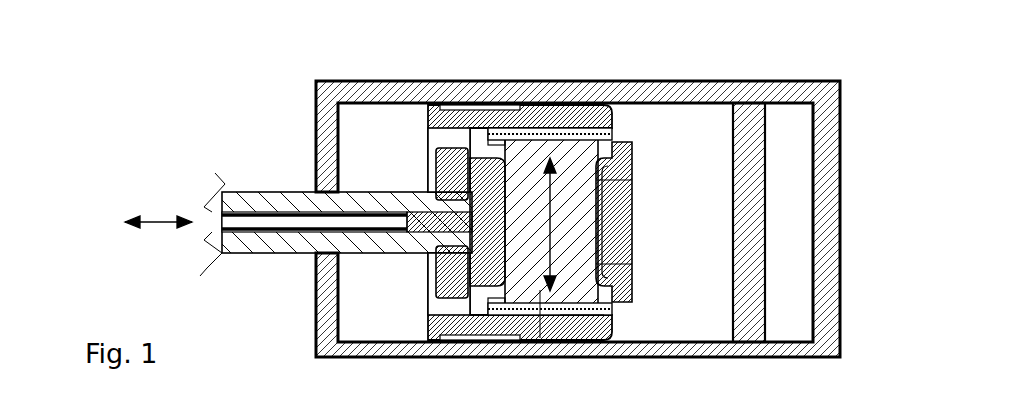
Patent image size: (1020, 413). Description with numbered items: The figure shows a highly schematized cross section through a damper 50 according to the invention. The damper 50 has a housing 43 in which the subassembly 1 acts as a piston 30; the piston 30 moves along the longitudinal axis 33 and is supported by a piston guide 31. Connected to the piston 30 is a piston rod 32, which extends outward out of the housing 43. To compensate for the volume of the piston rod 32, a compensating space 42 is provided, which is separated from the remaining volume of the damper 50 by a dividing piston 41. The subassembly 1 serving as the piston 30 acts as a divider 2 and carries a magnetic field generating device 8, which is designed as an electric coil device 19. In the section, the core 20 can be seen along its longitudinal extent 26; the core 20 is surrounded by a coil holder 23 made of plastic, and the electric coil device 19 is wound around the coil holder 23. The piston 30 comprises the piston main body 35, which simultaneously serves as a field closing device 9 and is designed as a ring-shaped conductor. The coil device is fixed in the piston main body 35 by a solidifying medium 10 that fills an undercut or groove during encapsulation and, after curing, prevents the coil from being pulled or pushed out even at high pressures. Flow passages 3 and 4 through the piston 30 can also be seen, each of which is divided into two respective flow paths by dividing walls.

The subassembly 1 is at (628, 122).
The divider 2 is at (566, 120).
The flow passage 3 is at (617, 133).
The flow passage 4 is at (620, 314).
The magnetic field generating device 8 is at (622, 175).
The field closing device 9 is at (428, 112).
The solidifying medium 10 is at (617, 232).
The electric coil device 19 is at (625, 203).
The core 20 is at (538, 338).
The coil holder 23 is at (625, 263).
The longitudinal extent 26 is at (545, 212).
The piston 30 is at (583, 343).
The piston guide 31 is at (387, 105).
The piston rod 32 is at (258, 192).
The longitudinal axis 33 is at (158, 214).
The piston main body 35 is at (447, 340).
The dividing piston 41 is at (745, 117).
The compensating space 42 is at (791, 120).
The housing 43 is at (322, 310).
The damper 50 is at (213, 107).